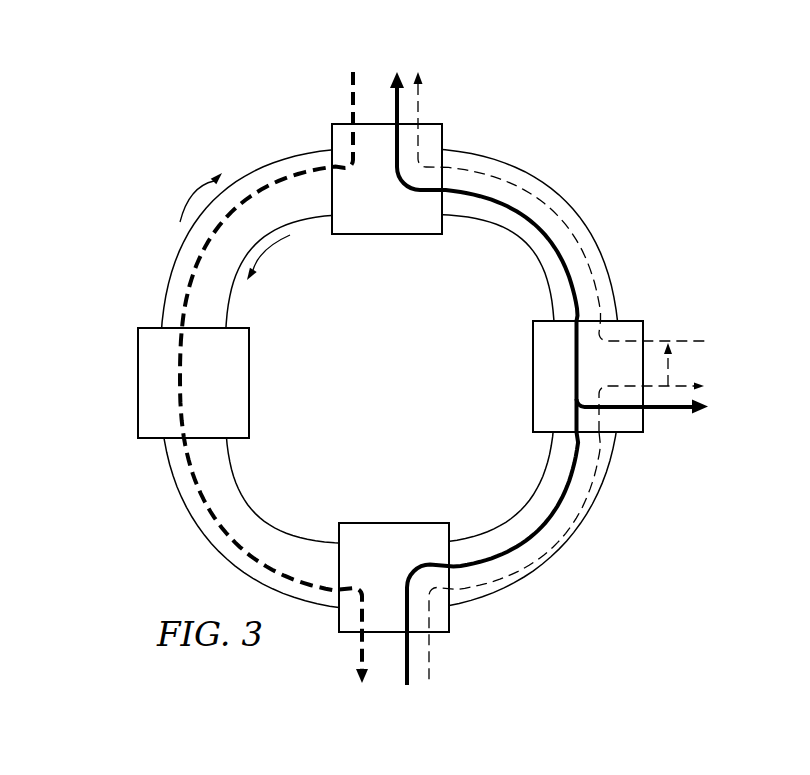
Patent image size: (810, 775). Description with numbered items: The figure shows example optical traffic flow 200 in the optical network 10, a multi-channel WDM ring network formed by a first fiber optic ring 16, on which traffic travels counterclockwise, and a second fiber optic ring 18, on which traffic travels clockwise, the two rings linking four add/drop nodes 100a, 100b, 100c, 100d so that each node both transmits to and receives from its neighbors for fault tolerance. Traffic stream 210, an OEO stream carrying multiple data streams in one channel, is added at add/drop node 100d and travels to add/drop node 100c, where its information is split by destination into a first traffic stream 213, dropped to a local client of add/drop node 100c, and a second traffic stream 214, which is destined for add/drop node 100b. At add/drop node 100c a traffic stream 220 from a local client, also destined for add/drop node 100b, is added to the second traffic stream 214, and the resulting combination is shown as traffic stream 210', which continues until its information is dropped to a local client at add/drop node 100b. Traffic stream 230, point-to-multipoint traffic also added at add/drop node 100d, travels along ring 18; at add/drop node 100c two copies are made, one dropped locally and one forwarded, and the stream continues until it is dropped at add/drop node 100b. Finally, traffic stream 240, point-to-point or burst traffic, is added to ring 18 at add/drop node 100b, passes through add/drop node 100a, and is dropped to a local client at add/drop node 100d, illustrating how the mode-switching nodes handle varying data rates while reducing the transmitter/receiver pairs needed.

The optical network 10 is at (600, 168).
The first fiber optic ring 16 is at (232, 290).
The second fiber optic ring 18 is at (277, 155).
The add/drop node 100a is at (138, 381).
The add/drop node 100b is at (390, 236).
The add/drop node 100c is at (533, 379).
The add/drop node 100d is at (393, 523).
The network configuration 200 is at (550, 58).
The traffic stream 210 is at (484, 390).
The traffic stream 210' is at (561, 378).
The first traffic stream 213 is at (690, 388).
The second traffic stream 214 is at (672, 358).
The traffic stream 220 is at (686, 340).
The traffic stream 230 is at (392, 688).
The traffic stream 240 is at (333, 80).